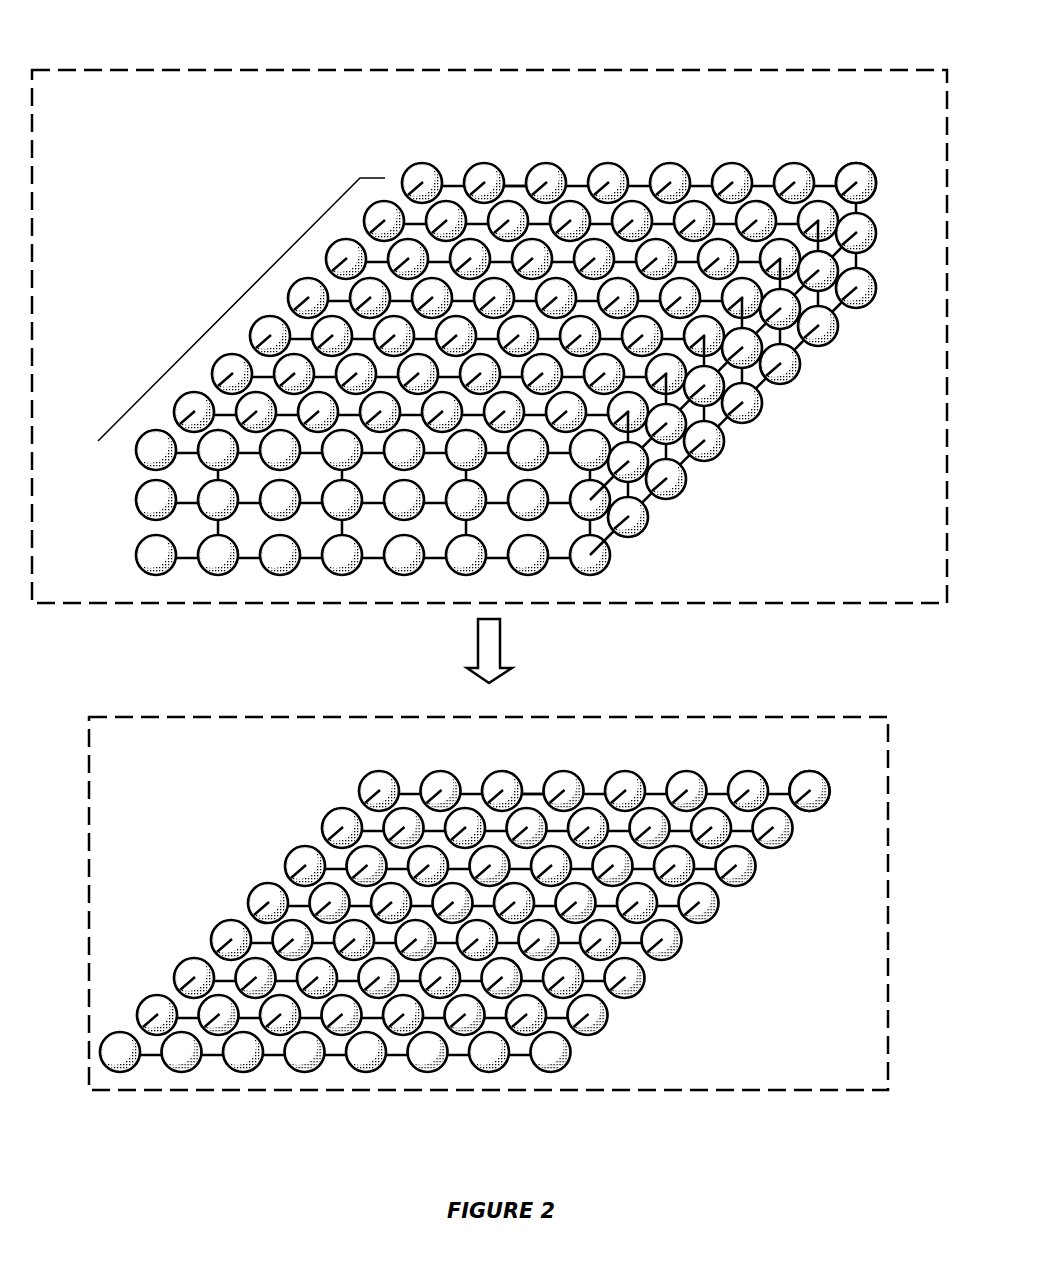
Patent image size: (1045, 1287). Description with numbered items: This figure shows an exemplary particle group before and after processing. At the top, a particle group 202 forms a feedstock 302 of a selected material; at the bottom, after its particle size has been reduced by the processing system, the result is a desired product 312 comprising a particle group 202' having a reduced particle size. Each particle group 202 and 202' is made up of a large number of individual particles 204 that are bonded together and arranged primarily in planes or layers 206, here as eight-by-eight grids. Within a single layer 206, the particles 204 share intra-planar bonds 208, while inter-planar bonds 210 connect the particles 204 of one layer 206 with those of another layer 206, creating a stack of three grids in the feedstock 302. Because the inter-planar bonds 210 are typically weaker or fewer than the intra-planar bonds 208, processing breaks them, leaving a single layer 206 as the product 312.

The feedstock 302 is at (217, 55).
The particle group 202 is at (532, 336).
The particle group having a reduced particle size 202' is at (462, 917).
The particle 204 is at (851, 176).
The layer 206 is at (216, 323).
The intra-planar bond 208 is at (513, 184).
The inter-planar bond 210 is at (847, 249).
The desired product 312 is at (171, 705).